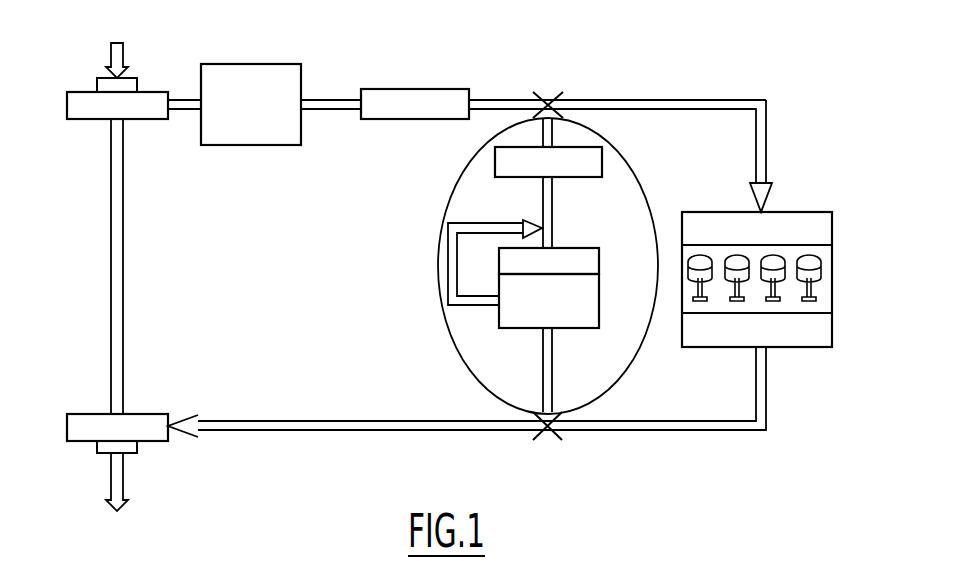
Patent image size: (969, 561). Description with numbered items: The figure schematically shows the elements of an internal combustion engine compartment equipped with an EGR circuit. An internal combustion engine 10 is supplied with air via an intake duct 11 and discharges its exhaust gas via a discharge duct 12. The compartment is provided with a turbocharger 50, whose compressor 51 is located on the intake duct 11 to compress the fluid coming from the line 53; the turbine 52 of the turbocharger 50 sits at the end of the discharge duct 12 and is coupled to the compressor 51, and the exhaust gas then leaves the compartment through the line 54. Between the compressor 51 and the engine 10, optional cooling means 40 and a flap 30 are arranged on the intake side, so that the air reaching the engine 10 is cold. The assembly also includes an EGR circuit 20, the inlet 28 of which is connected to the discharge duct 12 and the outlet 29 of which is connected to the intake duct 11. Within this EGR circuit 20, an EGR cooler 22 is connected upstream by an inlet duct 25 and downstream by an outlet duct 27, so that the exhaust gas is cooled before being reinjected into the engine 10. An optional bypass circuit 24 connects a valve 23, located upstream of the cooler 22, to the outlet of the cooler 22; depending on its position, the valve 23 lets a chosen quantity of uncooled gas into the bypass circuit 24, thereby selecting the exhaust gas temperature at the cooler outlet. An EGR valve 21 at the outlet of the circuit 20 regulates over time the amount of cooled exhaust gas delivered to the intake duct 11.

The internal combustion engine 10 is at (798, 208).
The intake duct 11 is at (685, 100).
The discharge duct 12 is at (722, 432).
The EGR circuit 20 is at (420, 253).
The EGR valve 21 is at (570, 157).
The EGR cooler 22 is at (580, 268).
The valve 23 is at (580, 295).
The bypass circuit 24 is at (503, 228).
The inlet duct 25 is at (545, 375).
The outlet duct 27 is at (538, 120).
The inlet 28 is at (548, 440).
The outlet 29 is at (548, 100).
The flap 30 is at (398, 99).
The cooling means 40 is at (264, 77).
The turbocharger 50 is at (109, 272).
The compressor 51 is at (150, 100).
The turbine 52 is at (82, 428).
The line 53 is at (117, 43).
The line 54 is at (117, 499).